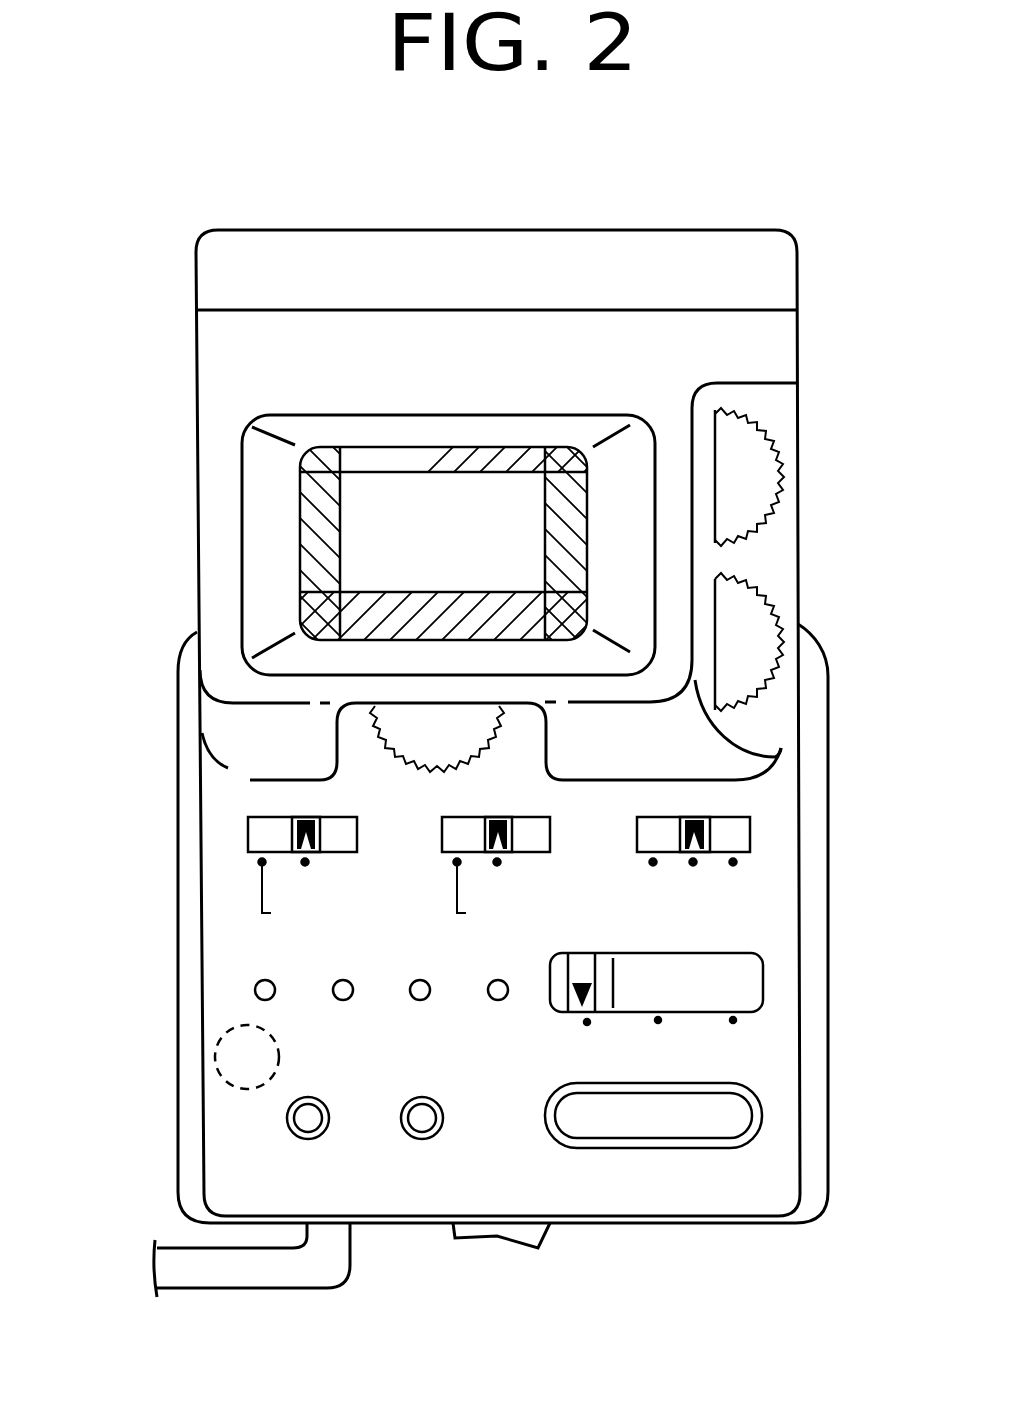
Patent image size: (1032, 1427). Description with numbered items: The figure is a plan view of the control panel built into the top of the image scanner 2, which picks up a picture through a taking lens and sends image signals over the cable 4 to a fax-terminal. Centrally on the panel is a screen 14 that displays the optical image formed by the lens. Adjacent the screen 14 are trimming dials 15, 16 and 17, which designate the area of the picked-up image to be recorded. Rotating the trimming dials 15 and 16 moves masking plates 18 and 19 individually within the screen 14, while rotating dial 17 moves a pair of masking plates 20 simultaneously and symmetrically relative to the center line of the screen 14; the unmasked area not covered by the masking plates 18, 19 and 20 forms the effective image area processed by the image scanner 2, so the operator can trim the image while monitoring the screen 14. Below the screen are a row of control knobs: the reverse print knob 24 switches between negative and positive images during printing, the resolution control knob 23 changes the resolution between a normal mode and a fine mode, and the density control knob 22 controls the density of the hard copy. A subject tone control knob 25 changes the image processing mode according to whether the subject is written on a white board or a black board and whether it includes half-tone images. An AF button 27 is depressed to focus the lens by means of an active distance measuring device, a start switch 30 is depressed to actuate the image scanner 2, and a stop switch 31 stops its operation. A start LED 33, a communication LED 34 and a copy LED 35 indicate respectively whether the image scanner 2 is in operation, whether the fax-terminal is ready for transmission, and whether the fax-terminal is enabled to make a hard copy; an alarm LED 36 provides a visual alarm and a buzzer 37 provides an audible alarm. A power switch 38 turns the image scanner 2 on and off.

The image scanner 2 is at (168, 908).
The cable 4 is at (277, 1280).
The screen 14 is at (507, 478).
The trimming dial 15 is at (763, 465).
The trimming dial 16 is at (757, 625).
The trimming dial 17 is at (480, 730).
The masking plate 18 is at (385, 475).
The masking plate 19 is at (483, 590).
The pair of masking plates 20 is at (307, 528).
The density control knob 22 is at (710, 837).
The resolution control knob 23 is at (513, 833).
The reverse print knob 24 is at (320, 833).
The subject tone control knob 25 is at (592, 973).
The AF button 27 is at (287, 1121).
The start switch 30 is at (740, 1113).
The stop switch 31 is at (401, 1120).
The start LED 33 is at (263, 979).
The communication LED 34 is at (341, 979).
The copy LED 35 is at (418, 979).
The alarm LED 36 is at (496, 979).
The buzzer 37 is at (214, 1066).
The power switch 38 is at (523, 1248).